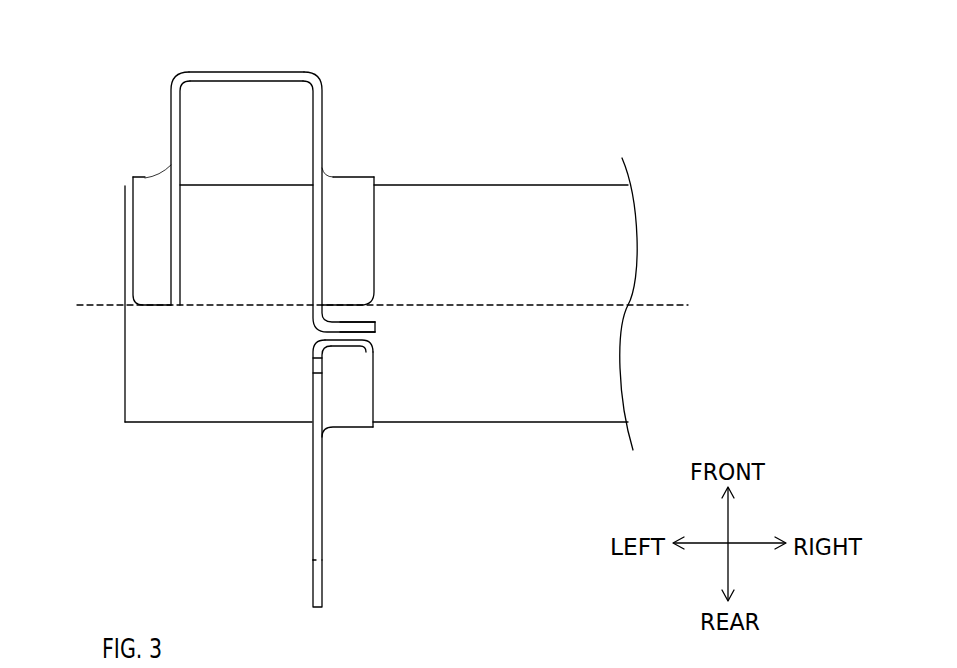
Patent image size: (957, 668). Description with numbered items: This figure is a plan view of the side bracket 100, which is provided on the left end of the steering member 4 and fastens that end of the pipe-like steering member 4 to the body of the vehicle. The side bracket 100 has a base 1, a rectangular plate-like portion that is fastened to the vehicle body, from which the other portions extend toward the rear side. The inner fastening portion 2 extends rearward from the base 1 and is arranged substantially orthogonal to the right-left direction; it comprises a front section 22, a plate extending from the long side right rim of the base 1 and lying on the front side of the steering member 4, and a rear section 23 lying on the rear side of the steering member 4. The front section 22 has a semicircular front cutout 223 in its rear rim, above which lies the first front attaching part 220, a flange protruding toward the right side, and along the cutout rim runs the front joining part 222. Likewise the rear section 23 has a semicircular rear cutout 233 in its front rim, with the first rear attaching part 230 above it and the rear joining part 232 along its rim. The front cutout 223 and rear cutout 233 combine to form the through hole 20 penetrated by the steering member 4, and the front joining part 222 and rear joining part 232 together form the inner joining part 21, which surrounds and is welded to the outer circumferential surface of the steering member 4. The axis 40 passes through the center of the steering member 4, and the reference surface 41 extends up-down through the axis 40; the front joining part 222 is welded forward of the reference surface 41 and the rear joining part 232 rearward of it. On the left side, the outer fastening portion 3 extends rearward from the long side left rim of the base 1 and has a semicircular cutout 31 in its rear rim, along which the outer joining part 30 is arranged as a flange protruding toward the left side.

The base 1 is at (317, 185).
The inner fastening portion 2 is at (374, 473).
The outer fastening portion 3 is at (178, 118).
The steering member 4 is at (361, 318).
The through hole 20 is at (421, 241).
The inner joining part 21 is at (397, 154).
The front section 22 is at (382, 204).
The rear section 23 is at (372, 473).
The outer joining part 30 is at (145, 180).
The cutout 31 is at (120, 235).
The axis 40 is at (239, 340).
The reference surface 41 is at (284, 305).
The side bracket 100 is at (342, 559).
The first front attaching part 220 is at (376, 326).
The front joining part 222 is at (360, 186).
The front cutout 223 is at (382, 239).
The first rear attaching part 230 is at (376, 345).
The rear joining part 232 is at (352, 410).
The rear cutout 233 is at (384, 391).